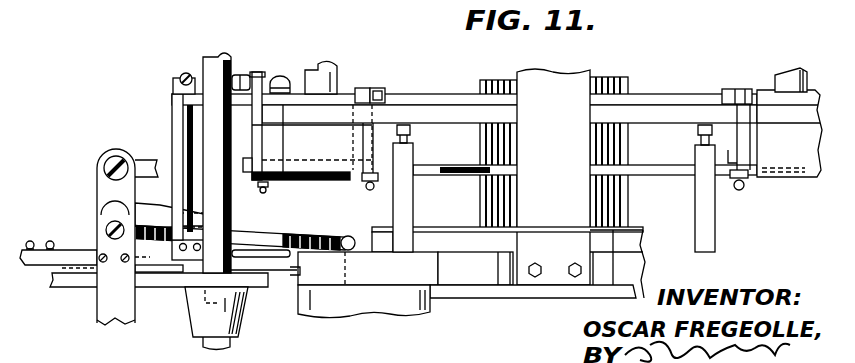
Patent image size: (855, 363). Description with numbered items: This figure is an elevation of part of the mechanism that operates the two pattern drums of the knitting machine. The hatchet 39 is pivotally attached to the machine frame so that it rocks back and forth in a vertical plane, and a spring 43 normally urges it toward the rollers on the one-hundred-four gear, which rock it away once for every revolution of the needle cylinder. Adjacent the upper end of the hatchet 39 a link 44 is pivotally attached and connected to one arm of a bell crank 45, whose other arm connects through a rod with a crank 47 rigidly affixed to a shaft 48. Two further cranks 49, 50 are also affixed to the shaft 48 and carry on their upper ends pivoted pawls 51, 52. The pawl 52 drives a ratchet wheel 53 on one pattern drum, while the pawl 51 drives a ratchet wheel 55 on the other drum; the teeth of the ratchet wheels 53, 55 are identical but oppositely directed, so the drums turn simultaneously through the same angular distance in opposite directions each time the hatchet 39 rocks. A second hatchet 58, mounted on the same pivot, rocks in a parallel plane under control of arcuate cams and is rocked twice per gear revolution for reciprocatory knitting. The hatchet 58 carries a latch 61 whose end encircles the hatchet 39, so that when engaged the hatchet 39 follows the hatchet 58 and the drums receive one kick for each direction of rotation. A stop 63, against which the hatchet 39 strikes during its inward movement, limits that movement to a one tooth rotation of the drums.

The hatchet 39 is at (97, 180).
The spring 43 is at (246, 228).
The link 44 is at (153, 209).
The bell crank 45 is at (175, 126).
The crank 47 is at (262, 136).
The shaft 48 is at (466, 160).
The crank 49 is at (360, 145).
The crank 50 is at (744, 134).
The pawl 51 is at (376, 95).
The pawl 52 is at (725, 90).
The ratchet wheel 53 is at (762, 90).
The ratchet wheel 55 is at (345, 96).
The second hatchet 58 is at (97, 304).
The latch 61 is at (84, 258).
The stop 63 is at (250, 256).